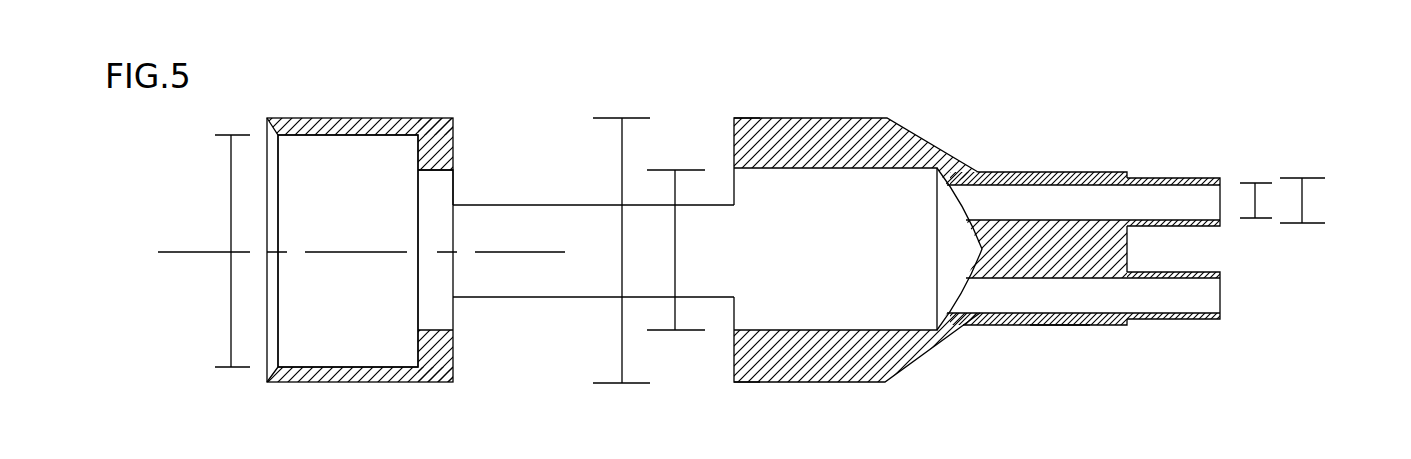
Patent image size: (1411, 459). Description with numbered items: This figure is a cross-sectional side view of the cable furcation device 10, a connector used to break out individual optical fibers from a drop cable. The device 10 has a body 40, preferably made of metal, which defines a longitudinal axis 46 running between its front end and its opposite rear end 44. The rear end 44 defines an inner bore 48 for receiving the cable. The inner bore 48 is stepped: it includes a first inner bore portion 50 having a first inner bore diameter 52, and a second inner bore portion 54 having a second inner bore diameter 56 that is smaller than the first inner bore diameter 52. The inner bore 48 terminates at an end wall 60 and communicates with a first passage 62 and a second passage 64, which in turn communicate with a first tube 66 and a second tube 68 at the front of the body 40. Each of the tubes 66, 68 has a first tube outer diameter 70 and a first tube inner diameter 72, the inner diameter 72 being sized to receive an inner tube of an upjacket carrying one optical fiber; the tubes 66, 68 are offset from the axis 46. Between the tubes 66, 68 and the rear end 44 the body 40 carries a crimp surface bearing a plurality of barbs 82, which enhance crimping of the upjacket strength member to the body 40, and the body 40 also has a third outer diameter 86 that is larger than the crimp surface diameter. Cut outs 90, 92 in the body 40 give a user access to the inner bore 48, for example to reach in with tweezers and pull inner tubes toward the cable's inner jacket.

The cable furcation device 10 is at (1027, 133).
The body 40 is at (812, 118).
The rear end 44 is at (268, 120).
The longitudinal axis 46 is at (177, 252).
The inner bore 48 is at (543, 279).
The first inner bore portion 50 is at (320, 136).
The first inner bore diameter 52 is at (231, 332).
The second inner bore portion 54 is at (445, 172).
The second inner bore diameter 56 is at (675, 312).
The end wall 60 is at (973, 237).
The first passage 62 is at (983, 180).
The second passage 64 is at (980, 313).
The first tube 66 is at (1155, 178).
The second tube 68 is at (1180, 319).
The first tube outer diameter 70 is at (1302, 200).
The first tube inner diameter 72 is at (1250, 190).
The barbs 82 is at (1080, 325).
The third outer diameter 86 is at (392, 118).
The cut out 90 is at (733, 135).
The cut out 92 is at (733, 356).